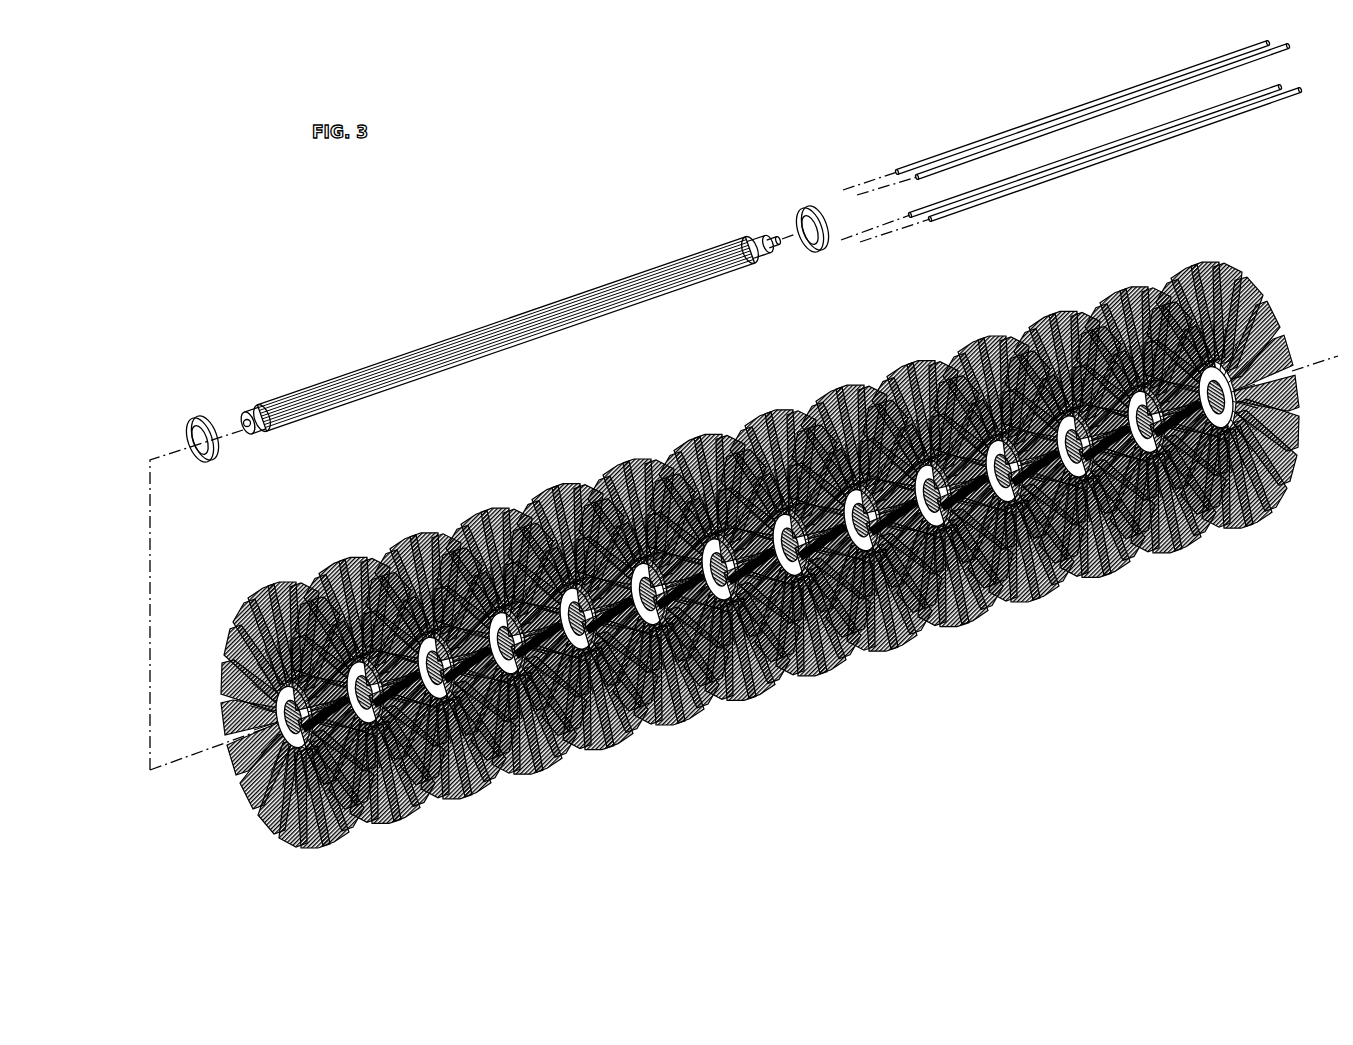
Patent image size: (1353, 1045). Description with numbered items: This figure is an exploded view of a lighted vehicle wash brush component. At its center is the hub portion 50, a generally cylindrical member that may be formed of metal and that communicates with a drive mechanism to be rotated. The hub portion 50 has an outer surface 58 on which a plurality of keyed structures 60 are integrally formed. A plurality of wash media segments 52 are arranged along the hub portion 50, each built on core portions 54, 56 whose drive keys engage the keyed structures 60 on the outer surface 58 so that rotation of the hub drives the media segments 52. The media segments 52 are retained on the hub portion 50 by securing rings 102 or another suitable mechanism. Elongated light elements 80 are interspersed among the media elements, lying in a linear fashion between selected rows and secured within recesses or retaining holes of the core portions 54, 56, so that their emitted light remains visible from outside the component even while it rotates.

The hub portion 50 is at (687, 240).
The wash media segments 52 is at (781, 715).
The core portion 54 is at (432, 798).
The core portion 56 is at (268, 742).
The outer surface 58 is at (308, 388).
The keyed structures 60 is at (362, 400).
The light elements 80 is at (997, 145).
The securing rings 102 is at (804, 215).